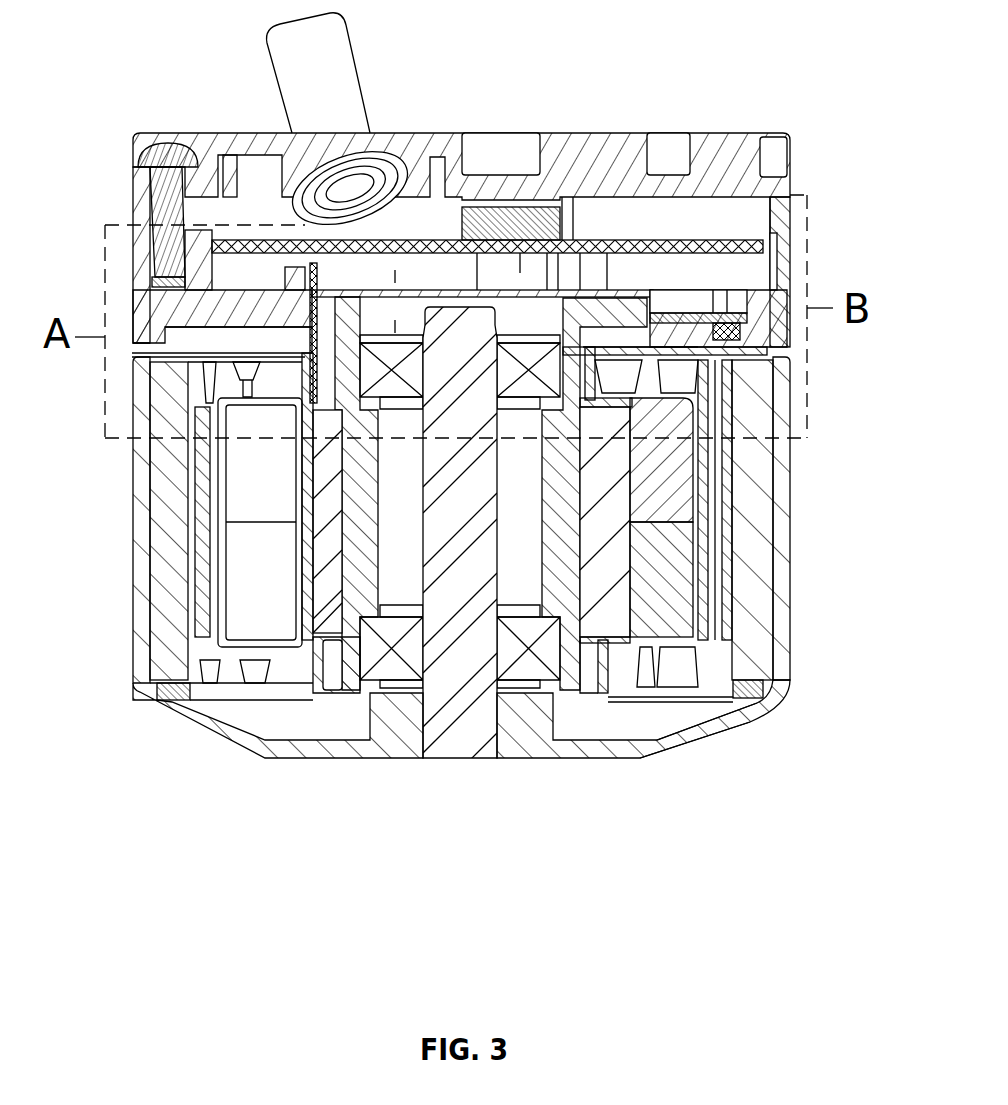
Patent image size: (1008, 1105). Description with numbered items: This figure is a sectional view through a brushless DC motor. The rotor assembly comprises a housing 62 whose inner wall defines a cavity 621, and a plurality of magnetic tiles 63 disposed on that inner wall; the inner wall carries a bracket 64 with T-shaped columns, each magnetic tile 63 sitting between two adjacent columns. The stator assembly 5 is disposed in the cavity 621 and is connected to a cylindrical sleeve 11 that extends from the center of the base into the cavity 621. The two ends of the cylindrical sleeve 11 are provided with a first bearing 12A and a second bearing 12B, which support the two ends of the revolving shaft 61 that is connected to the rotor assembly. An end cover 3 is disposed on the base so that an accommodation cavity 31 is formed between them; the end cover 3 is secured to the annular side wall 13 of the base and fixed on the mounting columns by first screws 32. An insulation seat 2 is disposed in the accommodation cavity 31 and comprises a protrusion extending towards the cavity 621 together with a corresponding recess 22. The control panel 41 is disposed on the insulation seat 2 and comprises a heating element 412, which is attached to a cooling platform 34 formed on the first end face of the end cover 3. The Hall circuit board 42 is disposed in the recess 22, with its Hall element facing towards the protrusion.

The insulation seat 2 is at (777, 257).
The end cover 3 is at (430, 143).
The stator assembly 5 is at (663, 553).
The cylindrical sleeve 11 is at (767, 683).
The first bearing 12A is at (523, 343).
The second bearing 12B is at (553, 650).
The annular side wall 13 is at (777, 300).
The recess 22 is at (737, 300).
The accommodation cavity 31 is at (743, 217).
The first screws 32 is at (168, 147).
The cooling platform 34 is at (503, 200).
The control panel 41 is at (657, 240).
The Hall circuit board 42 is at (685, 300).
The revolving shaft 61 is at (453, 657).
The housing 62 is at (780, 473).
The magnetic tiles 63 is at (747, 530).
The bracket 64 is at (748, 697).
The heating element 412 is at (500, 253).
The cavity 621 is at (657, 723).